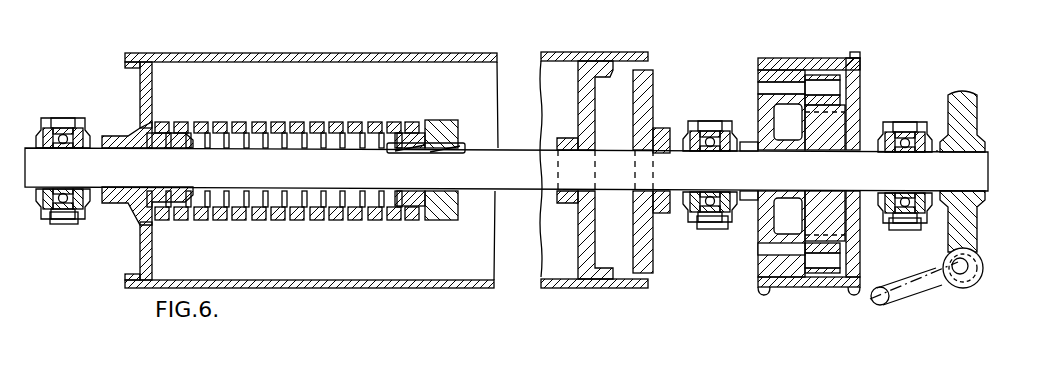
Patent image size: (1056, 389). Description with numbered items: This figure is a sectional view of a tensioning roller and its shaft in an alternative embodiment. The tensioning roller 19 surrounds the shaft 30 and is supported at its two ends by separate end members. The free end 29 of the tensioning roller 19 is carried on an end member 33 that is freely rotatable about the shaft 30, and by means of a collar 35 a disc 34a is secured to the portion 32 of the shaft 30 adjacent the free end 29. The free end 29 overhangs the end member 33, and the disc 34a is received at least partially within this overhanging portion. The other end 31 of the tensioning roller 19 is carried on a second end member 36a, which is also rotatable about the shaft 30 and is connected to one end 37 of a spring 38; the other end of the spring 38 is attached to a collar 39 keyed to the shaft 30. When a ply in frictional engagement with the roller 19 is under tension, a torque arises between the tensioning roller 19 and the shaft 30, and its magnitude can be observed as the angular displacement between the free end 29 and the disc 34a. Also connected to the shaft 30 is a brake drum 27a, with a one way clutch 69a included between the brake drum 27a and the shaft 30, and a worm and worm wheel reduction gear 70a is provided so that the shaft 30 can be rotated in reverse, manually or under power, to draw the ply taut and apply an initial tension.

The tensioning roller 19 is at (419, 53).
The other end of the tensioning roller 31 is at (147, 55).
The second end member 36a is at (152, 257).
The one end of the spring 37 is at (199, 121).
The spring 38 is at (327, 222).
The collar 39 is at (432, 220).
The shaft 30 is at (470, 189).
The free end of the tensioning roller 29 is at (623, 52).
The end member 33 is at (595, 232).
The disc 34a is at (657, 250).
The collar 35 is at (668, 128).
The portion of the shaft 32 is at (655, 178).
The brake drum 27a is at (795, 283).
The one way clutch 69a is at (848, 108).
The reduction gear 70a is at (978, 238).